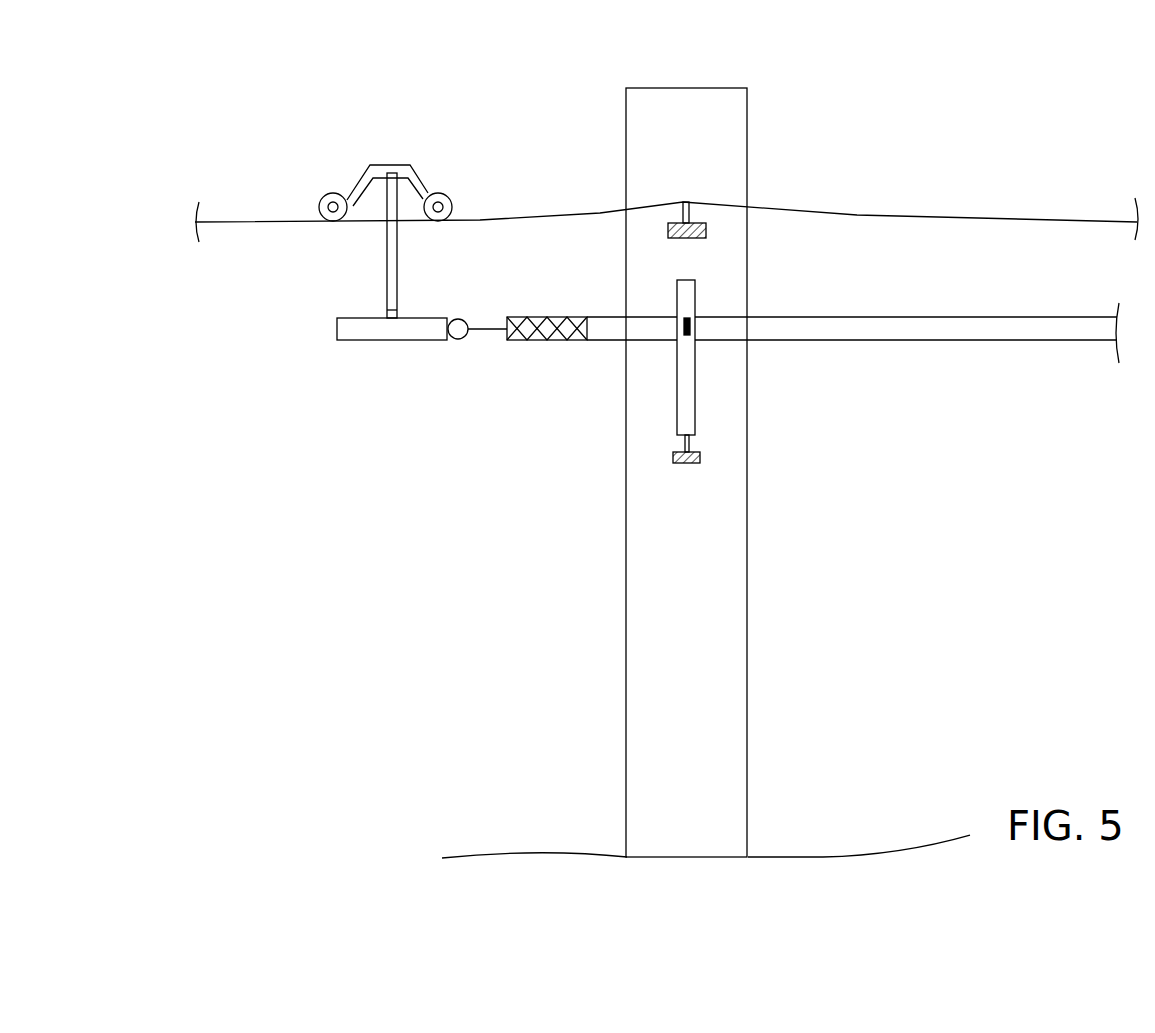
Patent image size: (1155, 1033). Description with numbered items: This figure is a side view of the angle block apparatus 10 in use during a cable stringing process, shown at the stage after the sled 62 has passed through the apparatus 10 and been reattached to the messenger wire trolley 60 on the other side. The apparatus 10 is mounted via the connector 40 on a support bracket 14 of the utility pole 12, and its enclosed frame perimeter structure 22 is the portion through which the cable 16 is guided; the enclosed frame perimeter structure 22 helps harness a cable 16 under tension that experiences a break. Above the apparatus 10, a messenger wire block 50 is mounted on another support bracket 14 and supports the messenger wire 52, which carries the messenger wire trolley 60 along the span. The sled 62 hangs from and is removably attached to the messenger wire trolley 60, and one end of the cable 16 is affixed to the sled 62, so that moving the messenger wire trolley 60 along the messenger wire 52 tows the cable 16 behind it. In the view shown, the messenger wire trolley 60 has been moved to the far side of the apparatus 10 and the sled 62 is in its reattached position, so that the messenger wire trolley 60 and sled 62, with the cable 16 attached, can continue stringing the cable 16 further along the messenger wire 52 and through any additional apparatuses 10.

The angle block apparatus 10 is at (682, 360).
The utility pole 12 is at (717, 575).
The support bracket 14 is at (667, 228).
The cable 16 is at (932, 328).
The enclosed frame perimeter structure 22 is at (697, 290).
The connector 40 is at (690, 328).
The messenger wire block 50 is at (693, 213).
The messenger wire 52 is at (262, 223).
The messenger wire trolley 60 is at (397, 177).
The sled 62 is at (397, 332).